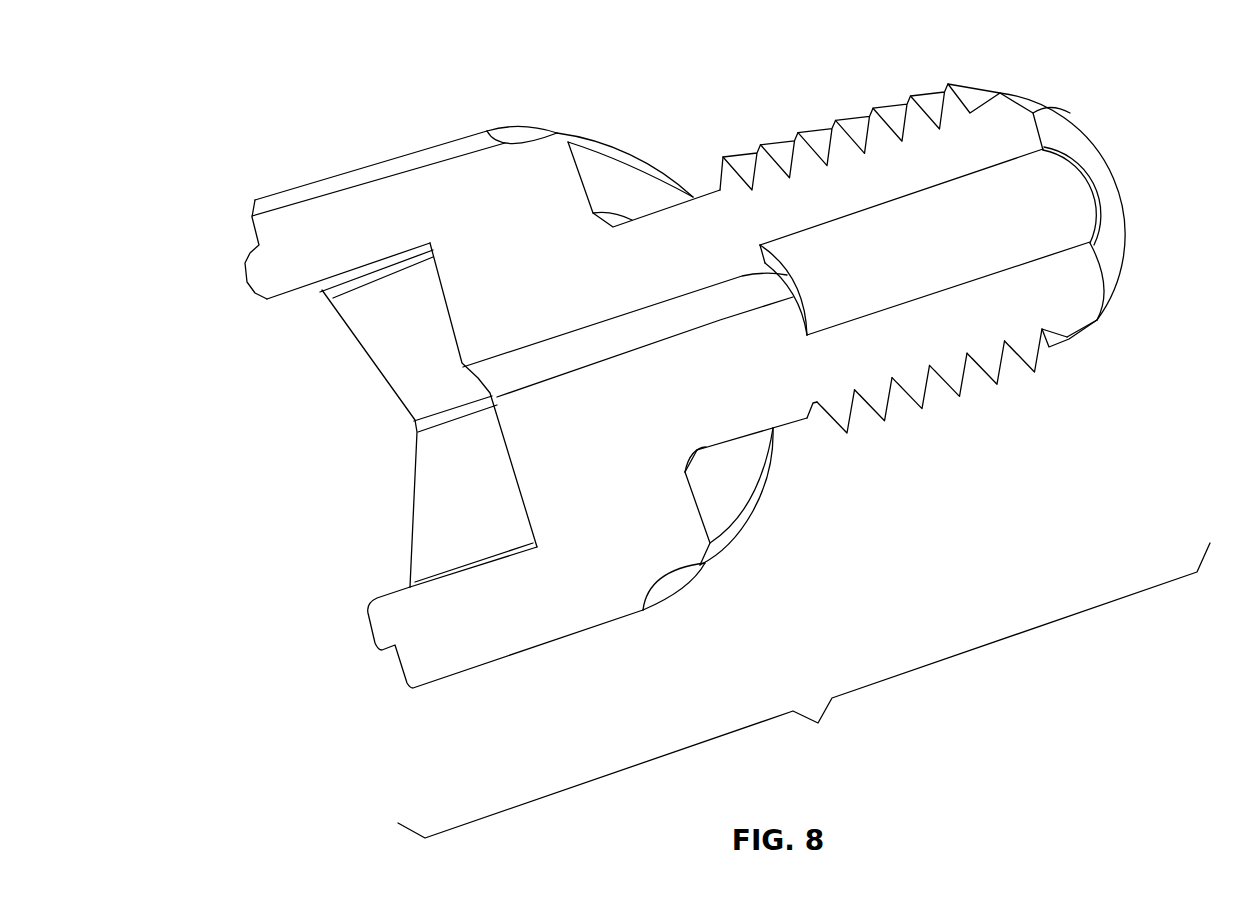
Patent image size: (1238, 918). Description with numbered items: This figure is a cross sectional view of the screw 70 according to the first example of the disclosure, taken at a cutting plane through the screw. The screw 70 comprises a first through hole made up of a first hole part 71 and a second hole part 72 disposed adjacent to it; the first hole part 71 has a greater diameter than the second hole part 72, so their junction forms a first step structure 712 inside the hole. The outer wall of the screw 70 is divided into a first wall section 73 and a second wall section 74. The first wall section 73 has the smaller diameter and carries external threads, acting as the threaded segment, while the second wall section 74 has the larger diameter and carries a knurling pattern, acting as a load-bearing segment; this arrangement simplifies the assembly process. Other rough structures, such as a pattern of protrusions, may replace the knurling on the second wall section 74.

The screw 70 is at (727, 461).
The first hole part 71 is at (850, 263).
The first step structure 712 is at (798, 272).
The second hole part 72 is at (652, 322).
The first wall section 73 is at (775, 430).
The second wall section 74 is at (600, 625).